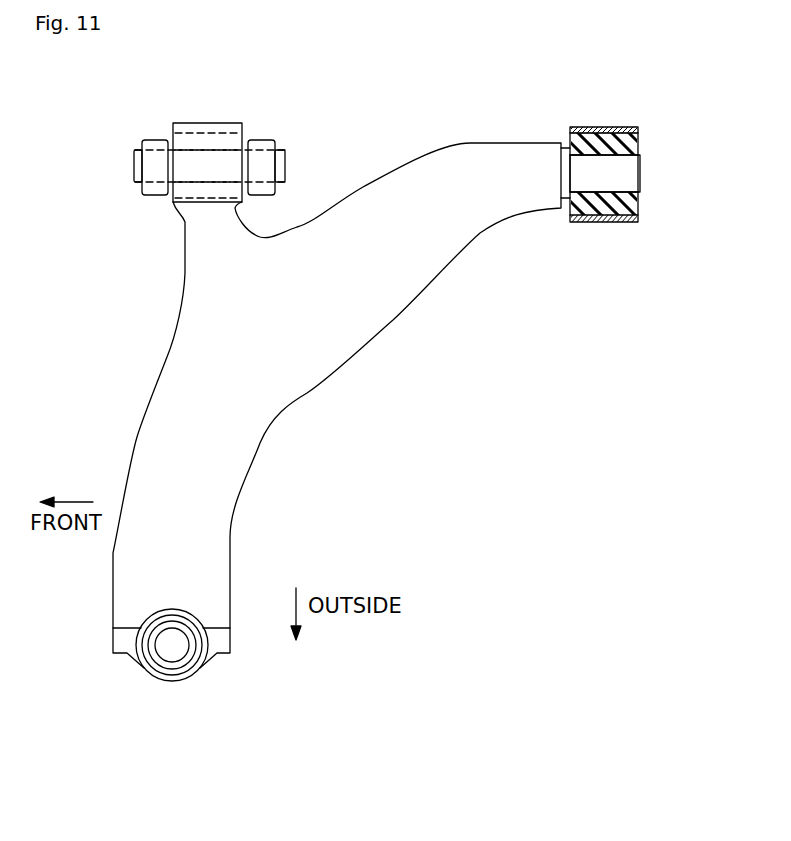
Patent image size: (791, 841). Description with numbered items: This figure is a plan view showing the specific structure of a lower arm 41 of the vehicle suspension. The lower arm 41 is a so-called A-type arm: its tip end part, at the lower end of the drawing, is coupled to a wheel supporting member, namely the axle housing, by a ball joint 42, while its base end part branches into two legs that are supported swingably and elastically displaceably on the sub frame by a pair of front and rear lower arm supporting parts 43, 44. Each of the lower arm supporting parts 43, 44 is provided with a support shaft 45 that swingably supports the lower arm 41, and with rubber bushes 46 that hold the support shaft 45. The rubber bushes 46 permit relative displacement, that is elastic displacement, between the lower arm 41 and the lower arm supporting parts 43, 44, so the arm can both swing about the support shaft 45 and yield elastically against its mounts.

The lower arm 41 is at (372, 352).
The ball joint 42 is at (170, 650).
The front lower arm supporting part 43 is at (179, 114).
The rear lower arm supporting part 44 is at (602, 224).
The support shaft 45 is at (190, 165).
The rubber bush 46 is at (208, 137).